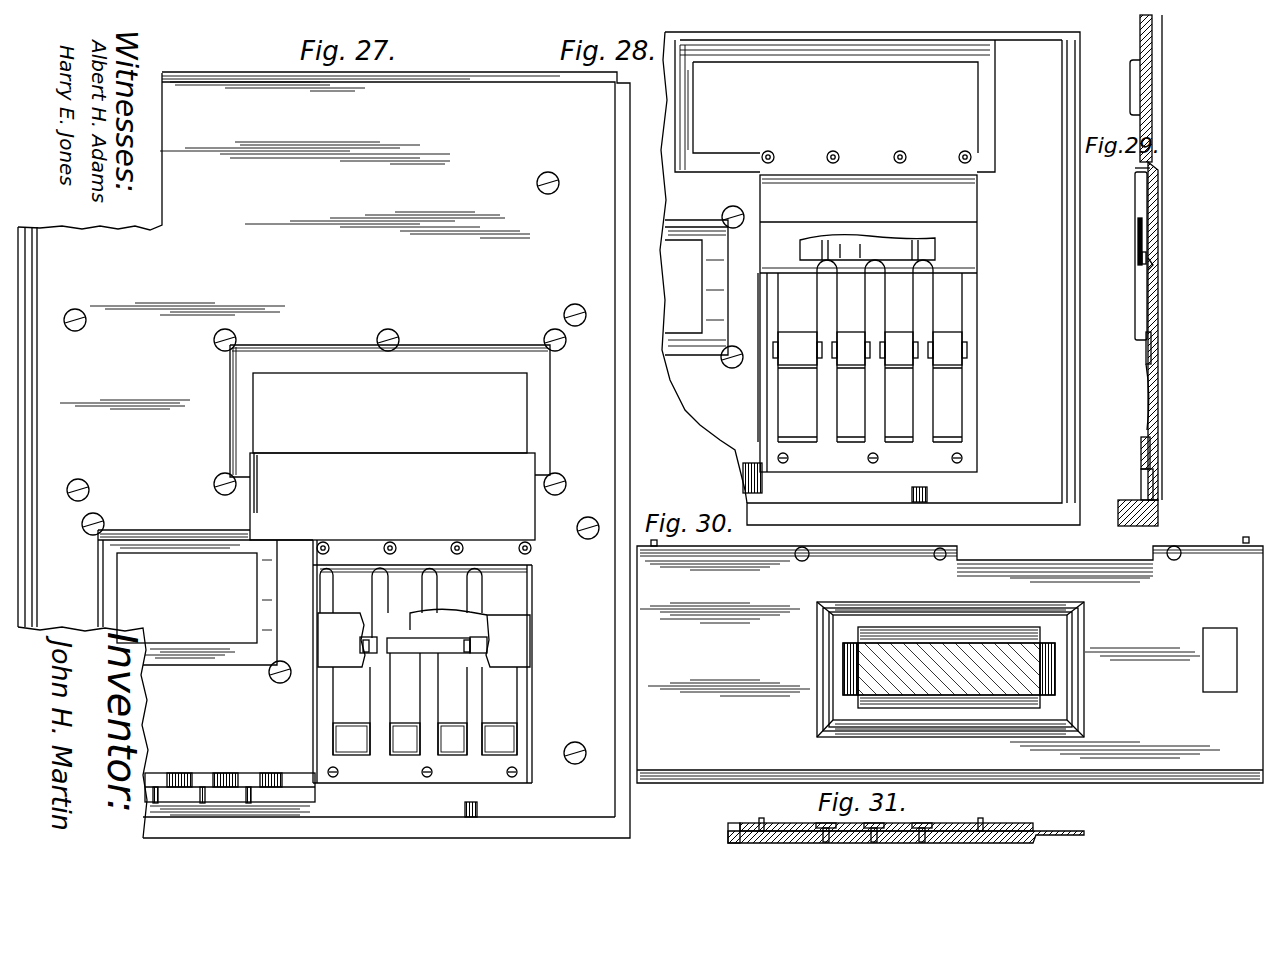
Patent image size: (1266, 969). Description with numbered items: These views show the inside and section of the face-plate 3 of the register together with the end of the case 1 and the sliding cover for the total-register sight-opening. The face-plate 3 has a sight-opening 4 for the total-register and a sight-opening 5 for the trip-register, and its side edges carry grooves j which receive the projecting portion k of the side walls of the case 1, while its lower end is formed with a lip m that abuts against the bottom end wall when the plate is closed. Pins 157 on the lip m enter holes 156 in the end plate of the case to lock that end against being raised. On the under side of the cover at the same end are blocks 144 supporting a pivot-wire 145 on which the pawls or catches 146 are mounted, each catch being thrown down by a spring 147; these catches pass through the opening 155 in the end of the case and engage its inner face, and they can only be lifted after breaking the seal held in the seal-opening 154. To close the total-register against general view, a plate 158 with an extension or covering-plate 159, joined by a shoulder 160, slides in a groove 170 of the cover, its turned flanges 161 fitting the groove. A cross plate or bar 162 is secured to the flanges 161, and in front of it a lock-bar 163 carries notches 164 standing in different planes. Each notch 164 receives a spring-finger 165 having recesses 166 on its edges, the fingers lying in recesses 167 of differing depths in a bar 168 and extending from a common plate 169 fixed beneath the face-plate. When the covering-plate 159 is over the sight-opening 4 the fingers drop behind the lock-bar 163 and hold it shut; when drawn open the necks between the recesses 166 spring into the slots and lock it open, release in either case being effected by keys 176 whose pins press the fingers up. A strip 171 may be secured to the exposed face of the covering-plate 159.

In FIG. 30, the case 1 is at (950, 664).
In FIG. 27, the face-plate 3 is at (324, 455).
In FIG. 28, the face-plate 3 is at (870, 278).
In FIG. 29, the face-plate 3 is at (1138, 481).
In FIG. 31, the face-plate 3 is at (1040, 823).
In FIG. 27, the sight-opening 4 is at (403, 383).
In FIG. 28, the sight-opening 4 is at (835, 106).
In FIG. 29, the sight-opening 4 is at (1153, 118).
In FIG. 27, the sight-opening 5 is at (155, 558).
In FIG. 28, the sight-opening 5 is at (673, 235).
In FIG. 29, the sight-opening 5 is at (1160, 311).
In FIG. 27, the grooves j is at (62, 403).
In FIG. 28, the grooves j is at (1064, 270).
In FIG. 31, the grooves j is at (1076, 826).
In FIG. 30, the projecting portion k is at (951, 533).
In FIG. 27, the projecting portion or lip m is at (363, 828).
In FIG. 28, the projecting portion or lip m is at (930, 517).
In FIG. 29, the projecting portion or lip m is at (1120, 536).
In FIG. 30, the projecting portion or lip m is at (1123, 536).
In FIG. 27, the ears or blocks 144 is at (300, 775).
In FIG. 27, the pivot-wire 145 is at (257, 775).
In FIG. 27, the pawls or catches 146 is at (203, 790).
In FIG. 27, the spring 147 is at (185, 775).
In FIG. 30, the seal-opening 154 is at (950, 669).
In FIG. 30, the opening 155 is at (956, 617).
In FIG. 30, the holes 156 is at (1188, 538).
In FIG. 27, the pins 157 is at (478, 806).
In FIG. 28, the pins 157 is at (930, 495).
In FIG. 27, the plate 158 is at (405, 593).
In FIG. 28, the plate 158 is at (869, 211).
In FIG. 29, the plate 158 is at (1159, 226).
In FIG. 31, the plate 158 is at (785, 823).
In FIG. 27, the covering-plate 159 is at (392, 496).
In FIG. 28, the covering-plate 159 is at (861, 119).
In FIG. 29, the covering-plate 159 is at (1108, 115).
In FIG. 27, the shoulder 160 is at (424, 551).
In FIG. 28, the shoulder 160 is at (866, 162).
In FIG. 29, the shoulder 160 is at (1136, 170).
In FIG. 27, the flanges 161 is at (313, 597).
In FIG. 28, the flanges 161 is at (980, 262).
In FIG. 29, the flanges 161 is at (1136, 284).
In FIG. 31, the flanges 161 is at (755, 822).
In FIG. 27, the plate or bar 162 is at (424, 640).
In FIG. 28, the plate or bar 162 is at (883, 247).
In FIG. 29, the plate or bar 162 is at (1137, 237).
In FIG. 31, the plate or bar 162 is at (905, 823).
In FIG. 27, the lock-bar 163 is at (420, 655).
In FIG. 28, the lock-bar 163 is at (885, 253).
In FIG. 29, the lock-bar 163 is at (1154, 263).
In FIG. 31, the lock-bar 163 is at (925, 823).
In FIG. 27, the notches 164 is at (466, 655).
In FIG. 28, the notches 164 is at (827, 250).
In FIG. 29, the notches 164 is at (1141, 253).
In FIG. 31, the notches 164 is at (820, 823).
In FIG. 27, the spring-fingers 165 is at (331, 609).
In FIG. 28, the spring-fingers 165 is at (775, 292).
In FIG. 29, the spring-fingers 165 is at (1147, 378).
In FIG. 27, the recess 166 is at (373, 664).
In FIG. 28, the recess 166 is at (812, 345).
In FIG. 27, the recesses 167 is at (352, 715).
In FIG. 28, the recesses 167 is at (810, 368).
In FIG. 27, the bar 168 is at (500, 743).
In FIG. 28, the bar 168 is at (899, 370).
In FIG. 29, the bar 168 is at (1146, 346).
In FIG. 27, the common plate 169 is at (422, 773).
In FIG. 28, the common plate 169 is at (870, 461).
In FIG. 29, the common plate 169 is at (1141, 452).
In FIG. 27, the opening or groove 170 is at (536, 748).
In FIG. 28, the opening or groove 170 is at (978, 398).
In FIG. 29, the opening or groove 170 is at (1147, 420).
In FIG. 29, the strip 171 is at (1141, 82).
In FIG. 28, the keys 176 is at (760, 398).